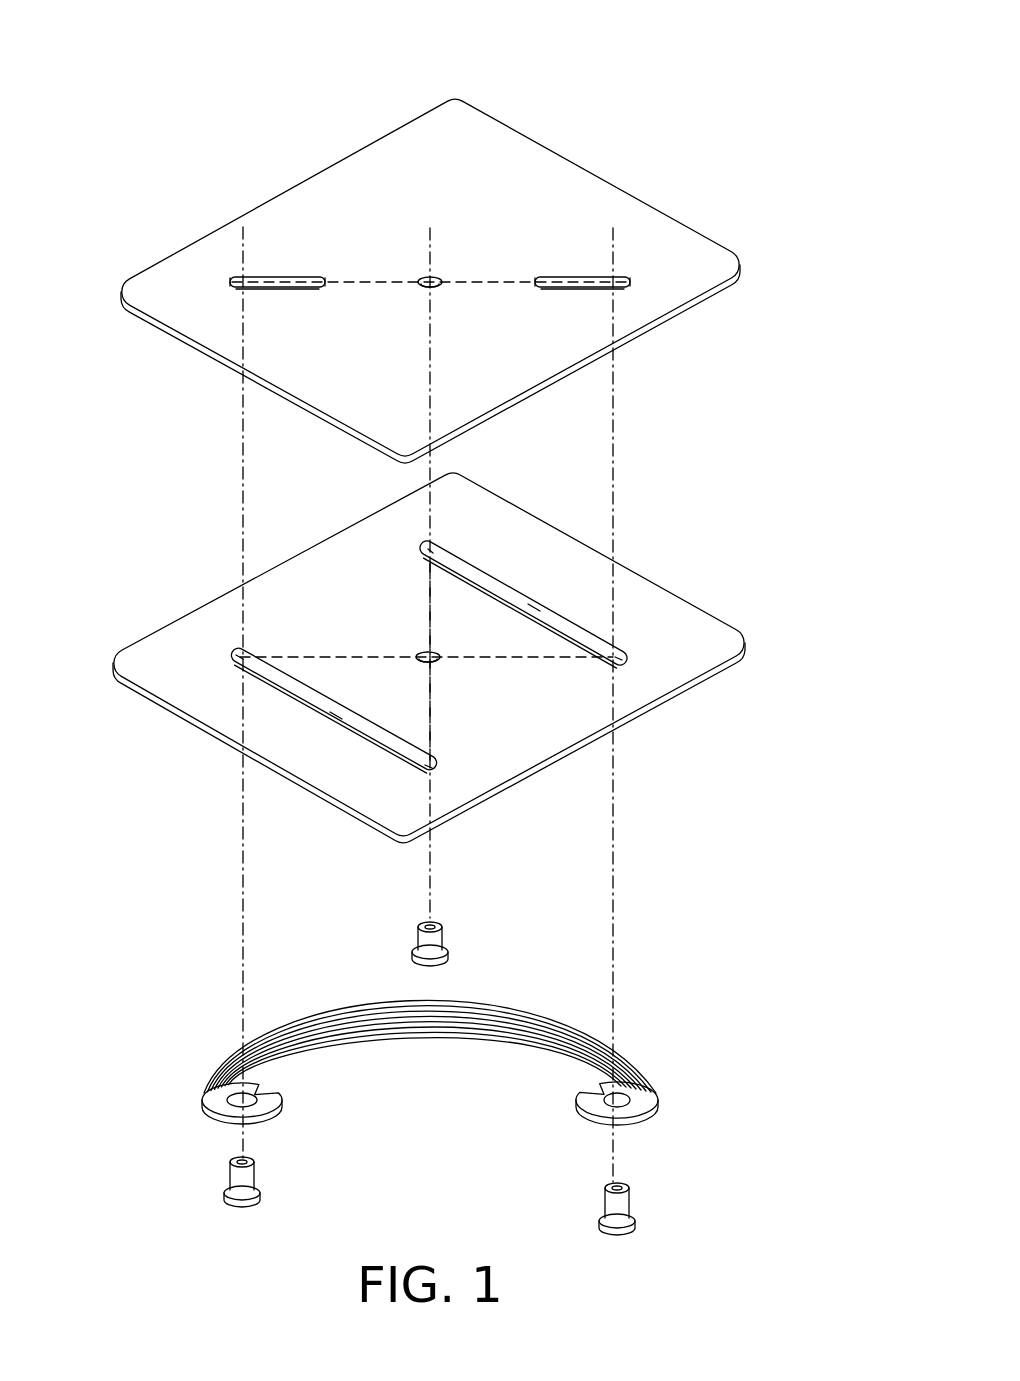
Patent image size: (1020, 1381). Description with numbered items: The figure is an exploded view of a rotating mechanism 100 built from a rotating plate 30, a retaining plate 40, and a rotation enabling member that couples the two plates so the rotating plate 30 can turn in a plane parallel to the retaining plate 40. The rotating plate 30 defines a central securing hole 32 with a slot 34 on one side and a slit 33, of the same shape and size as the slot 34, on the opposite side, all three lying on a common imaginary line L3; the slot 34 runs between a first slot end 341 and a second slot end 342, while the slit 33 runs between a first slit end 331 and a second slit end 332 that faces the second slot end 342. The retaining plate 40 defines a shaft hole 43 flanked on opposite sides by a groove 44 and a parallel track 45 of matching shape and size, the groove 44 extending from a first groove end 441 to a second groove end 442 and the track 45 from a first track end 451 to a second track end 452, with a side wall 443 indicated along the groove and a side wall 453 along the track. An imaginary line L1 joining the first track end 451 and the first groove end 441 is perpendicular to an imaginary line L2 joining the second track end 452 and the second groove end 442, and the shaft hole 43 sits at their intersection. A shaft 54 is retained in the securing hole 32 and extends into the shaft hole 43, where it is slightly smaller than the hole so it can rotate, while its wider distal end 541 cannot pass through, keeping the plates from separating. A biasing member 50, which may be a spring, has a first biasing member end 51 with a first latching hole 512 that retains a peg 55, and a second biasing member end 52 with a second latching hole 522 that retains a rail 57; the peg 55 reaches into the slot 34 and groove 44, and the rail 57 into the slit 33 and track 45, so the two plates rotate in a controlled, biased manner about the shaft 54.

The rotating mechanism 100 is at (456, 52).
The rotating plate 30 is at (419, 270).
The securing hole 32 is at (428, 278).
The slit 33 is at (275, 279).
The first slit end 331 is at (232, 282).
The second slit end 332 is at (318, 280).
The slot 34 is at (580, 279).
The first slot end 341 is at (628, 282).
The second slot end 342 is at (537, 279).
The imaginary line L3 is at (430, 263).
The retaining plate 40 is at (430, 670).
The shaft hole 43 is at (424, 654).
The groove 44 is at (502, 590).
The first groove end 441 is at (628, 662).
The second groove end 442 is at (438, 548).
The side wall of third slot 443 is at (536, 612).
The track 45 is at (300, 695).
The first track end 451 is at (238, 652).
The second track end 452 is at (422, 765).
The side wall of fourth slot 453 is at (340, 716).
The imaginary line L1 is at (426, 639).
The imaginary line L2 is at (450, 660).
The biasing member 50 is at (431, 1037).
The first biasing member end 51 is at (666, 1075).
The first latching hole 512 is at (624, 1094).
The second biasing member end 52 is at (194, 1058).
The second latching hole 522 is at (224, 1092).
The shaft 54 is at (432, 941).
The distal end 541 is at (412, 955).
The peg 55 is at (625, 1204).
The rail 57 is at (232, 1176).